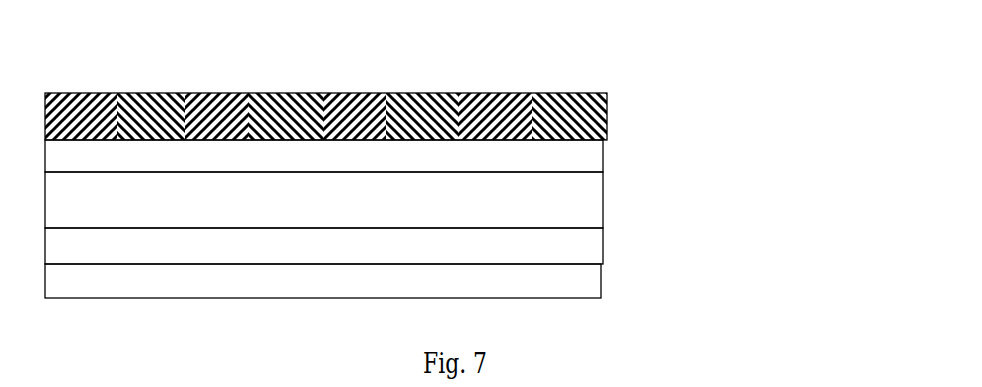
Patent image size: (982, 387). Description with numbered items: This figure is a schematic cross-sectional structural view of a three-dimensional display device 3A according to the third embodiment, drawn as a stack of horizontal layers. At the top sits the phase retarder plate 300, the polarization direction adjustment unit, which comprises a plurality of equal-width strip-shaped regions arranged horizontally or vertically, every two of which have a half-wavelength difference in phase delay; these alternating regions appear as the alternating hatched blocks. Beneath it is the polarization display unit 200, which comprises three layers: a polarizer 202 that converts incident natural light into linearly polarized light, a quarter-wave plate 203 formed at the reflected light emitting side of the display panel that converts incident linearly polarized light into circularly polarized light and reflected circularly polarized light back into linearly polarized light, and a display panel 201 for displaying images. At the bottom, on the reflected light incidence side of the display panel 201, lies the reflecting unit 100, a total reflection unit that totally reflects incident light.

The 3D display device 3A is at (622, 82).
The phase retarder plate 300 is at (607, 124).
The polarization display unit 200 is at (409, 202).
The polarizer 202 is at (603, 154).
The λ/4 wave plate 203 is at (598, 199).
The display panel 201 is at (361, 245).
The reflecting unit 100 is at (601, 282).